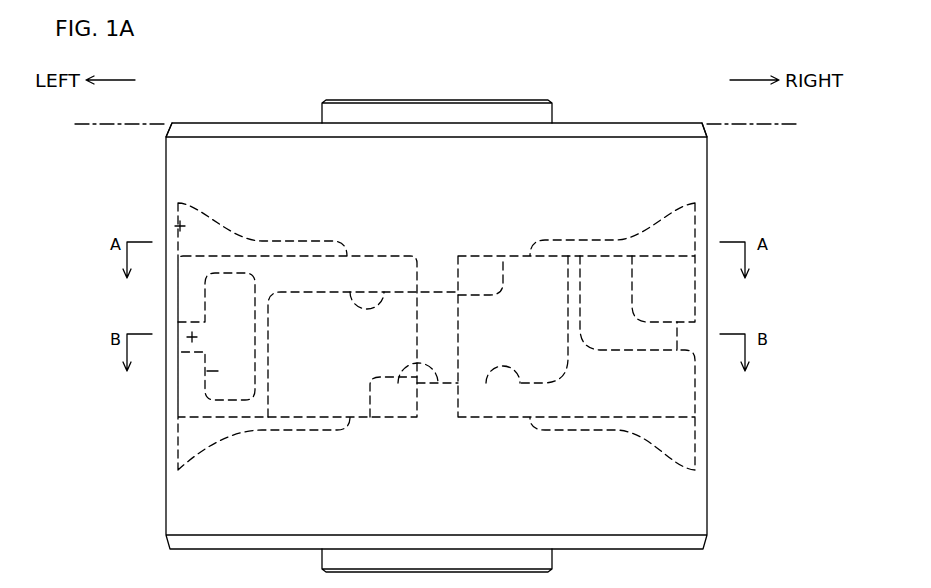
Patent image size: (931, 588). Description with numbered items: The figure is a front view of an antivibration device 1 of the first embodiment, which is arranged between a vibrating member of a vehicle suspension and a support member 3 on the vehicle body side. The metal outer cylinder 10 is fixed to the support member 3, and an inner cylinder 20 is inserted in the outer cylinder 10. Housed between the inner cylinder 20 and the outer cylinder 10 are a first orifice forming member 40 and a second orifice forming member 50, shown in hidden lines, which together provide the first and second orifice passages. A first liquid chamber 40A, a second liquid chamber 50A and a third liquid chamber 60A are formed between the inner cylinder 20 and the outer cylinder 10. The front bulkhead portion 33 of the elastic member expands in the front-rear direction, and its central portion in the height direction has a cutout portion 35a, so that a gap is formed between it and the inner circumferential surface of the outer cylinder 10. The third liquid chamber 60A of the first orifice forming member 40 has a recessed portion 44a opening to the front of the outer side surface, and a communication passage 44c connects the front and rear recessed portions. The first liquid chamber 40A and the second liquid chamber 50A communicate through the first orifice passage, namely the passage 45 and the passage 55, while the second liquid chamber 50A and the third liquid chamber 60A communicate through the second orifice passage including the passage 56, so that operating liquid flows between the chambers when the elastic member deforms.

The antivibration device 1 is at (618, 85).
The support member 3 is at (723, 140).
The outer cylinder 10 is at (690, 168).
The inner cylinder 20 is at (358, 100).
The bulkhead portion 33 is at (447, 405).
The cutout portion 35a is at (392, 383).
The first orifice forming member 40 is at (191, 440).
The first liquid chamber 40A is at (178, 225).
The recessed portion 44a is at (205, 373).
The communication passage 44c is at (190, 340).
The passage 45 is at (388, 288).
The second orifice forming member 50 is at (689, 431).
The second liquid chamber 50A is at (680, 228).
The passage 55 is at (520, 383).
The passage 56 is at (680, 333).
The third liquid chamber 60A is at (180, 328).